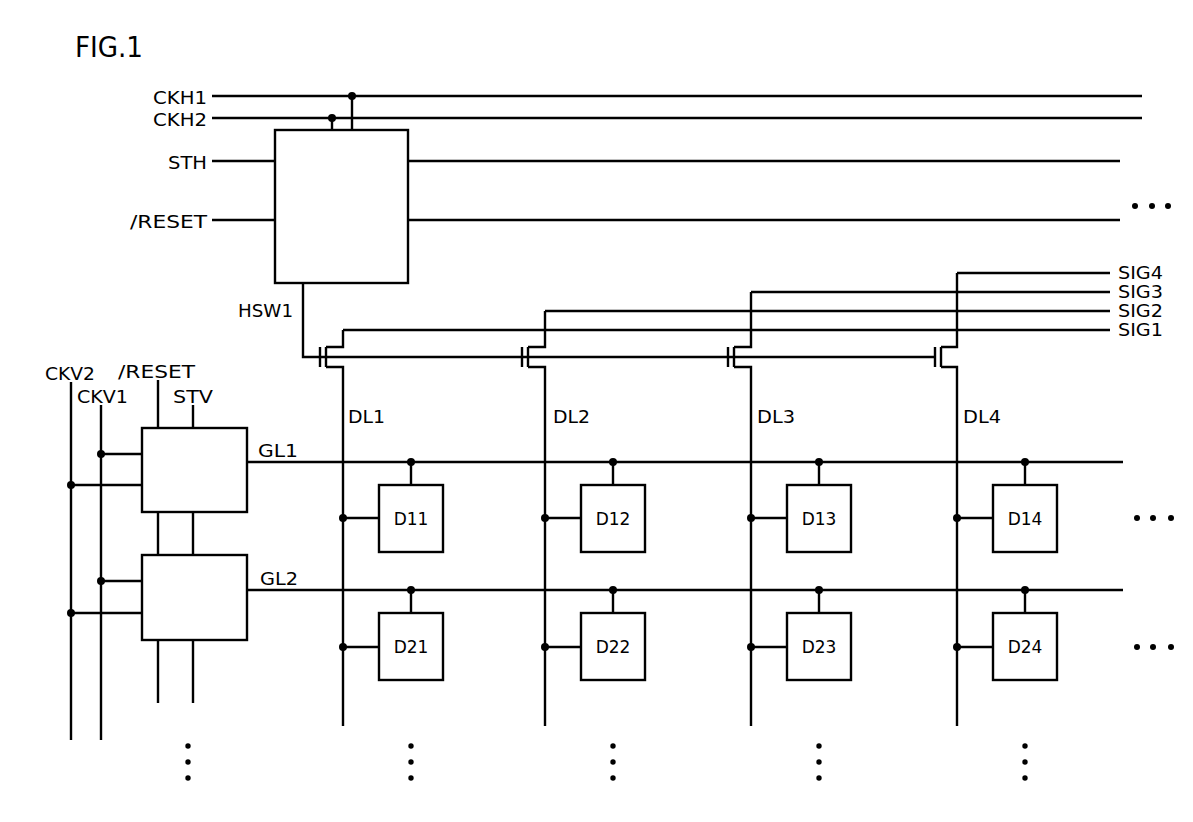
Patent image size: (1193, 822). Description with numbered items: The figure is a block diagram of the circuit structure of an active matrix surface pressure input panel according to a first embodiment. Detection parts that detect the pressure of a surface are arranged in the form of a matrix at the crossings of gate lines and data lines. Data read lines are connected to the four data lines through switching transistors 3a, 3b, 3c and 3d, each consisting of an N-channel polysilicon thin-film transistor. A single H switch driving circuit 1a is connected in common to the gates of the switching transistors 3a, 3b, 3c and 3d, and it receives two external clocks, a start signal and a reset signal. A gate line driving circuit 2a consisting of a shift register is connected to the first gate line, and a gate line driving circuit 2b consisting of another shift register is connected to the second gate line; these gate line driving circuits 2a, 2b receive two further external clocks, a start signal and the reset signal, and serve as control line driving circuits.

The H switch driving circuit 1a is at (408, 137).
The gate line driving circuit 2a is at (231, 426).
The gate line driving circuit 2b is at (231, 553).
The switching transistor 3a is at (317, 368).
The switching transistor 3b is at (519, 368).
The switching transistor 3c is at (725, 368).
The switching transistor 3d is at (932, 368).